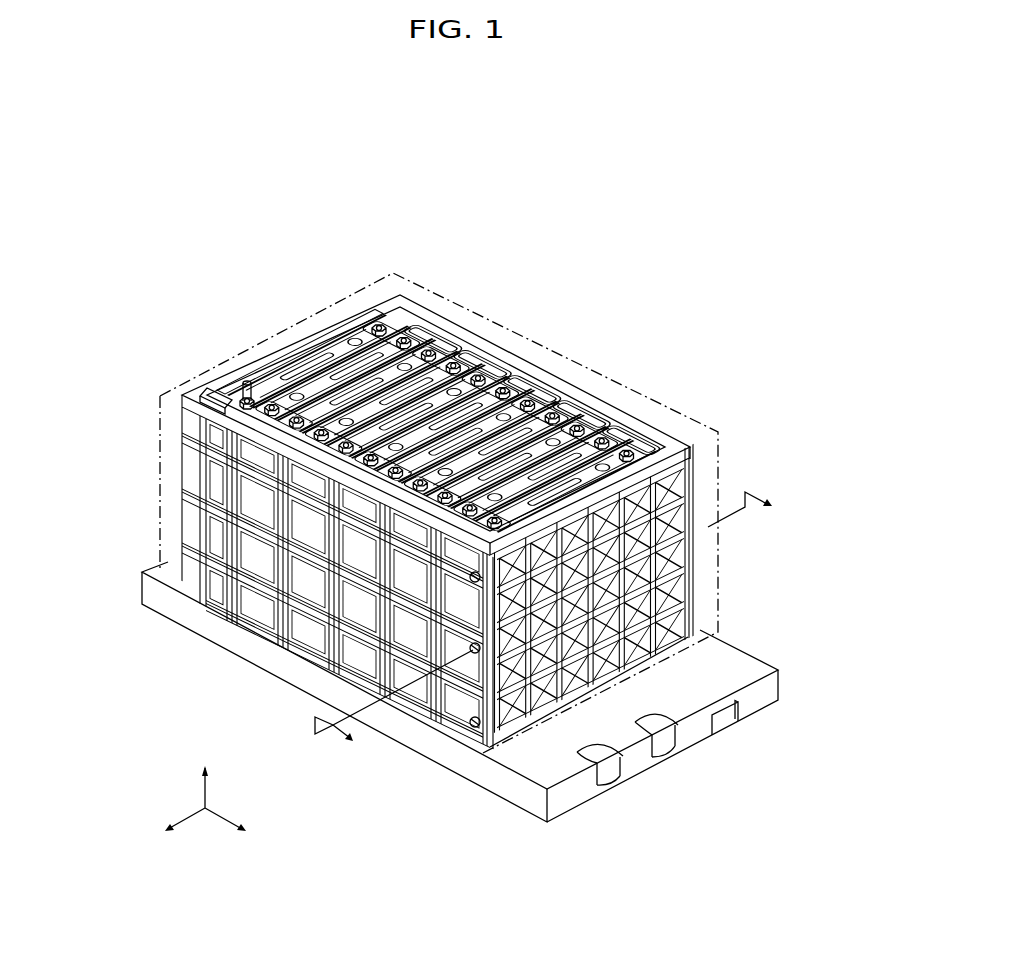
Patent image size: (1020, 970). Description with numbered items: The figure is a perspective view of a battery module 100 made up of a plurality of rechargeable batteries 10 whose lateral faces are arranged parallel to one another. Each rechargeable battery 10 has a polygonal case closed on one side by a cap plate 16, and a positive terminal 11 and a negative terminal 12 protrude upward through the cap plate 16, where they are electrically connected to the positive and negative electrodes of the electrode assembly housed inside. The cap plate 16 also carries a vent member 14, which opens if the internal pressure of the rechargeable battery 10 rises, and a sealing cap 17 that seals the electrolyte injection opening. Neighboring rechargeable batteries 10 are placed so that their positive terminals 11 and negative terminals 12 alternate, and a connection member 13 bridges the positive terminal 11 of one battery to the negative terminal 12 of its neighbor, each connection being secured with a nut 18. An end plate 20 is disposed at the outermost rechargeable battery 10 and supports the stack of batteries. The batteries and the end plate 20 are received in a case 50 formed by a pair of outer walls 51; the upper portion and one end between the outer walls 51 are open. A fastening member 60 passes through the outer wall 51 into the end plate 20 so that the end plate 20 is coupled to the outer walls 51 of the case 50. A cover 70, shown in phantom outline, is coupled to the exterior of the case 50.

The battery module 100 is at (360, 170).
The rechargeable battery 10 is at (340, 357).
The positive terminal 11 is at (384, 314).
The negative terminal 12 is at (230, 390).
The connection member 13 is at (402, 316).
The vent member 14 is at (290, 390).
The cap plate 16 is at (311, 348).
The sealing cap 17 is at (245, 391).
The nut 18 is at (380, 322).
The end plate 20 is at (694, 572).
The case 50 is at (541, 357).
The outer wall 51 is at (590, 395).
The fastening member 60 is at (466, 733).
The cover 70 is at (667, 407).